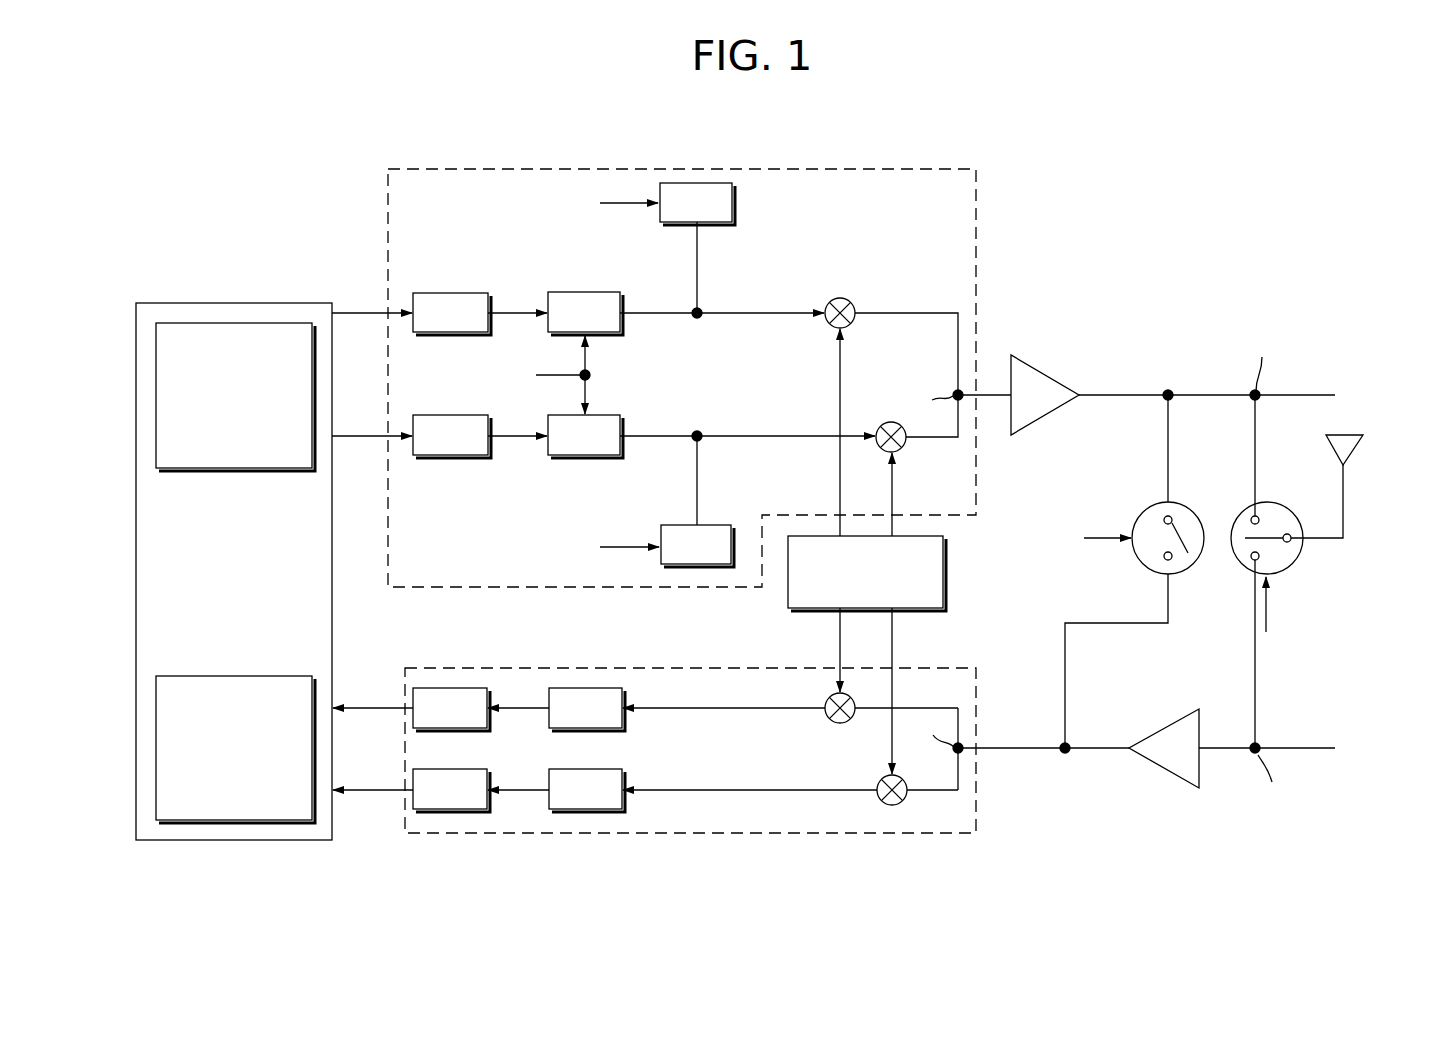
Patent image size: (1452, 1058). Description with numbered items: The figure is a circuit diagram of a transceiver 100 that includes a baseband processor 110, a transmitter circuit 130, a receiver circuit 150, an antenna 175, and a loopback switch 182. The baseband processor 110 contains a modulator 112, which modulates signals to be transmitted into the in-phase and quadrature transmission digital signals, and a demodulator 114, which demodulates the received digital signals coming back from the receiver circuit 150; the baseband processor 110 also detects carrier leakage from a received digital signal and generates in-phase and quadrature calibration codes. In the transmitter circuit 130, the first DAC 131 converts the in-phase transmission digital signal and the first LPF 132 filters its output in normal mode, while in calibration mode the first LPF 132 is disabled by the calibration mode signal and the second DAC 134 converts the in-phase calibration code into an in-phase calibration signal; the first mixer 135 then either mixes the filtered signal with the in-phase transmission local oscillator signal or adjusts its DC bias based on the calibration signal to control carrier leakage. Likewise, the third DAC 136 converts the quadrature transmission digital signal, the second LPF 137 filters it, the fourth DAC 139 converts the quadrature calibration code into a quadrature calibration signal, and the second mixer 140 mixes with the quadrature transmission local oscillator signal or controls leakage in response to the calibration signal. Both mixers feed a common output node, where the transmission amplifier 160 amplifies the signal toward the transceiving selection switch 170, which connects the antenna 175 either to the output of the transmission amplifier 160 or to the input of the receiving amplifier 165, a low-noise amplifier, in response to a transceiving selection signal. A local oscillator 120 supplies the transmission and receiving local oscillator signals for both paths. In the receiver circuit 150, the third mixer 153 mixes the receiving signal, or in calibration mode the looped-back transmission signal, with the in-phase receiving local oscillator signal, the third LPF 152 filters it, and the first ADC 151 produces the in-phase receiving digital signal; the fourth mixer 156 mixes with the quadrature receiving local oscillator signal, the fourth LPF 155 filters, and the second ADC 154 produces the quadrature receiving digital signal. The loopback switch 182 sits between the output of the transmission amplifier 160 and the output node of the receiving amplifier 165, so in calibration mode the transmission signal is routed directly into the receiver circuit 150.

The transceiver 100 is at (778, 133).
The baseband processor 110 is at (207, 302).
The modulator 112 is at (260, 322).
The demodulator 114 is at (258, 675).
The local oscillator 120 is at (946, 582).
The transmitter circuit 130 is at (977, 287).
The first digital-to-analog converter 131 is at (452, 292).
The first low-pass filter 132 is at (586, 291).
The second DAC 134 is at (736, 203).
The first mixer 135 is at (851, 301).
The third DAC 136 is at (450, 458).
The second LPF 137 is at (585, 458).
The fourth DAC 139 is at (697, 567).
The second mixer 140 is at (891, 421).
The receiver circuit 150 is at (977, 812).
The first ADC 151 is at (450, 687).
The third LPF 152 is at (586, 687).
The third mixer 153 is at (840, 724).
The second ADC 154 is at (449, 812).
The fourth LPF 155 is at (585, 812).
The fourth mixer 156 is at (890, 806).
The transmission amplifier 160 is at (1048, 372).
The receiving amplifier 165 is at (1172, 722).
The transceiving selection switch 170 is at (1295, 562).
The antenna 175 is at (1357, 450).
The loopback switch 182 is at (1136, 514).